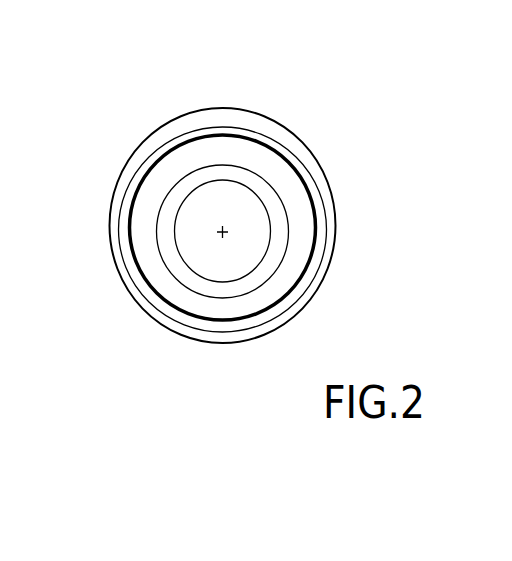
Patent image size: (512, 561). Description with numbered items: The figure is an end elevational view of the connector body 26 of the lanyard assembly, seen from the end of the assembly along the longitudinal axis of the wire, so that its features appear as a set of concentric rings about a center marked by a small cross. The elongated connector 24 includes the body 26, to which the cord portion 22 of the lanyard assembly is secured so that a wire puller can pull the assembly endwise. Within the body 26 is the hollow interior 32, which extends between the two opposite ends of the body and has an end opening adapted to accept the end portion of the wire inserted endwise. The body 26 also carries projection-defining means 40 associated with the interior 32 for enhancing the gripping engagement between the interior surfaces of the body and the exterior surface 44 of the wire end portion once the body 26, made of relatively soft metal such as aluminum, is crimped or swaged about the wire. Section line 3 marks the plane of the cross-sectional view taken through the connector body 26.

The section line 3- 3 is at (227, 97).
The cord portion 22 is at (318, 153).
The connector 24 is at (338, 197).
The connector body 26 is at (112, 216).
The hollow interior 32 is at (290, 300).
The projection-defining means 40 is at (110, 333).
The exterior surface 44 is at (269, 112).